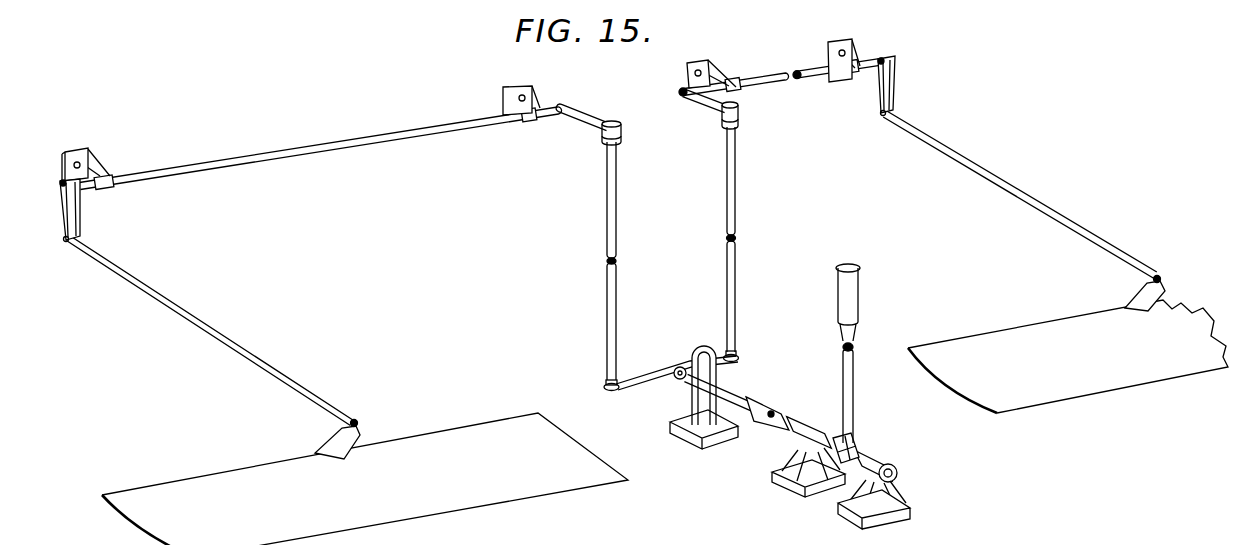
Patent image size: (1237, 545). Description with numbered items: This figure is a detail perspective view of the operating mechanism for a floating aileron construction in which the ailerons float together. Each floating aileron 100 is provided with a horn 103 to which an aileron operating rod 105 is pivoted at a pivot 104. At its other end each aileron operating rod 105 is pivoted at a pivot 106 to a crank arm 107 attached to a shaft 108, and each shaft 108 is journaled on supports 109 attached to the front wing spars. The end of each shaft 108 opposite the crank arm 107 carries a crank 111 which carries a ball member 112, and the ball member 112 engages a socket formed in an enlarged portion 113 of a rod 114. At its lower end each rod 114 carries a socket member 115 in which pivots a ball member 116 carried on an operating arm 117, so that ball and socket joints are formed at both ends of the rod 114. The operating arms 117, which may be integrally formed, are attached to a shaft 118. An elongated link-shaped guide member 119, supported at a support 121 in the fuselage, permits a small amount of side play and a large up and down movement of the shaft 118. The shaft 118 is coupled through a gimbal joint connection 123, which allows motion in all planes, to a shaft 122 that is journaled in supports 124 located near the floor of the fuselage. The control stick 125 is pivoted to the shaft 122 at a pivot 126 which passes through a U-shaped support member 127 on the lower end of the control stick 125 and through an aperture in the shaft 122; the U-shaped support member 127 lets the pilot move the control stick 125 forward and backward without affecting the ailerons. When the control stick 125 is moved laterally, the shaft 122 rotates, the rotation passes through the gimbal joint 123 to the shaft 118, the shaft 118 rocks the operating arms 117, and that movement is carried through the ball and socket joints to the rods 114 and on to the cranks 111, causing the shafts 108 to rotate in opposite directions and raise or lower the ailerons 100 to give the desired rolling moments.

The floating aileron 100 is at (171, 485).
The aileron horn 103 is at (336, 430).
The pivot 104 is at (362, 421).
The aileron operating rod 105 is at (250, 347).
The pivot 106 is at (62, 242).
The crank arm 107 is at (60, 218).
The shaft 108 is at (310, 148).
The support 109 is at (89, 156).
The crank 111 is at (578, 131).
The ball member 112 is at (619, 130).
The enlarged portion 113 is at (606, 141).
The rod 114 is at (607, 236).
The socket member 115 is at (605, 381).
The ball member 116 is at (604, 392).
The operating arm 117 is at (658, 377).
The shaft 118 is at (676, 381).
The elongated link-shaped guide member 119 is at (704, 347).
The support 121 is at (674, 433).
The shaft 122 is at (793, 425).
The gimbal joint connection 123 is at (776, 414).
The support 124 is at (800, 441).
The control stick 125 is at (858, 398).
The pivot 126 is at (822, 491).
The U-shaped support member 127 is at (857, 448).